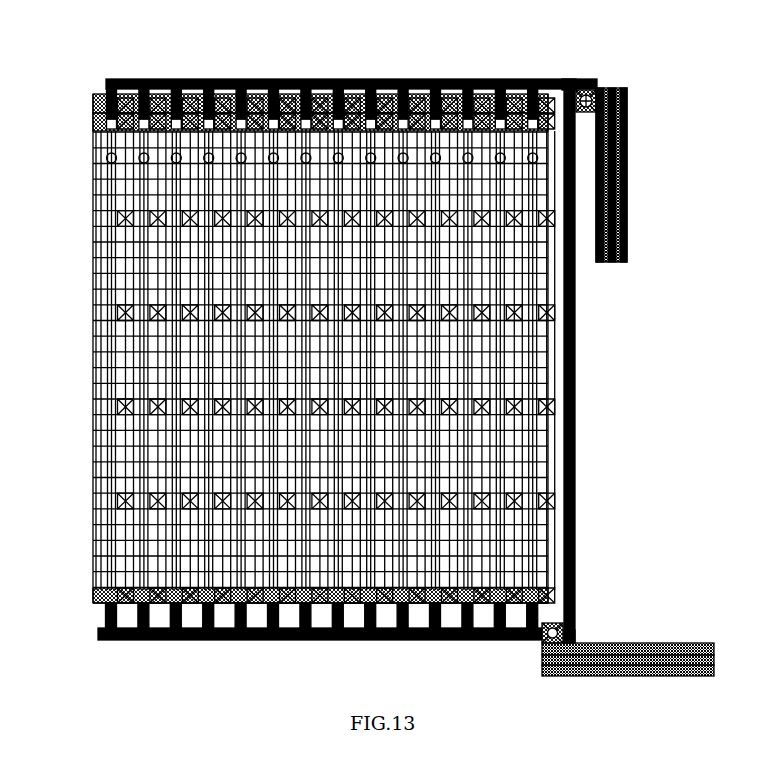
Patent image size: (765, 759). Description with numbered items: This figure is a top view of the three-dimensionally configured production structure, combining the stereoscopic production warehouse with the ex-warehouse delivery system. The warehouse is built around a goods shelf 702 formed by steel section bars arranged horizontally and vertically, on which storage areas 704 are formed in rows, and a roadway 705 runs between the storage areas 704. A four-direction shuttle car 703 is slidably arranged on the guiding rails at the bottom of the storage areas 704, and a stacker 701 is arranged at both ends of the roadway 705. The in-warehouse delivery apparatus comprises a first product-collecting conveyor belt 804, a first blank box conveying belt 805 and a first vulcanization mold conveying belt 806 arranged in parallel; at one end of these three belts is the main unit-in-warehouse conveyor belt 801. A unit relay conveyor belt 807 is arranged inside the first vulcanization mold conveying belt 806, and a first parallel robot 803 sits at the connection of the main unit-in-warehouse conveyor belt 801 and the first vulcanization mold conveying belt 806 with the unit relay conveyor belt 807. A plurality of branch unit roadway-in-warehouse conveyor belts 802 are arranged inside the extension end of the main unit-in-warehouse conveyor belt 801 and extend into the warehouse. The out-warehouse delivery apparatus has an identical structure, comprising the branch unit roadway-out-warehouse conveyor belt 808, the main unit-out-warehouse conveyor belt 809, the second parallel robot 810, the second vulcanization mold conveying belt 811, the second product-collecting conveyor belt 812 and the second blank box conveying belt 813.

The stacker 701 is at (103, 90).
The goods shelf 702 is at (102, 107).
The four-direction shuttle car 703 is at (100, 127).
The storage area 704 is at (100, 160).
The roadway 705 is at (98, 190).
The main unit-in-warehouse conveyor belt 801 is at (533, 78).
The branch unit roadway-in-warehouse conveyor belt 802 is at (570, 80).
The first parallel robot 803 is at (598, 88).
The first product-collecting conveyor belt 804 is at (628, 106).
The first blank box conveying belt 805 is at (628, 125).
The first vulcanization mold conveying belt 806 is at (628, 147).
The unit relay conveyor belt 807 is at (575, 385).
The branch unit roadway-out-warehouse conveyor belt 808 is at (538, 612).
The main unit-out-warehouse conveyor belt 809 is at (545, 623).
The second parallel robot 810 is at (577, 630).
The second vulcanization mold conveying belt 811 is at (592, 643).
The second product-collecting conveyor belt 812 is at (603, 643).
The second blank box conveying belt 813 is at (617, 643).